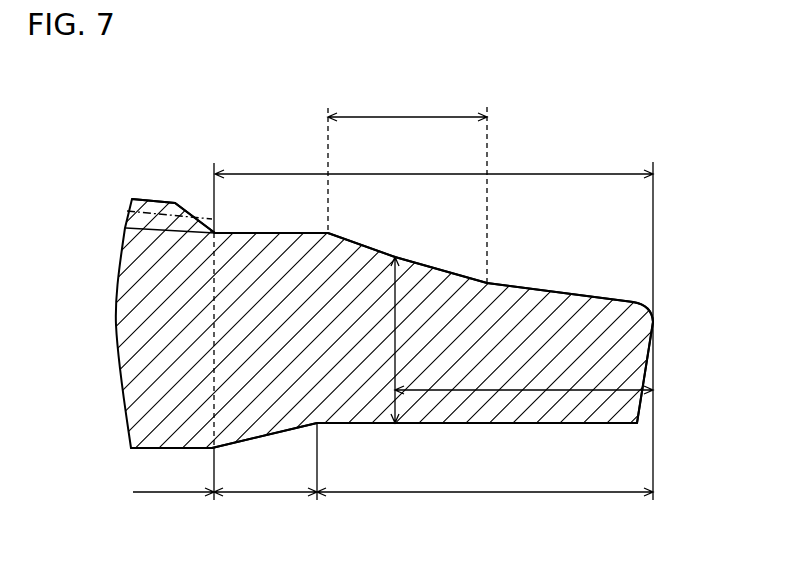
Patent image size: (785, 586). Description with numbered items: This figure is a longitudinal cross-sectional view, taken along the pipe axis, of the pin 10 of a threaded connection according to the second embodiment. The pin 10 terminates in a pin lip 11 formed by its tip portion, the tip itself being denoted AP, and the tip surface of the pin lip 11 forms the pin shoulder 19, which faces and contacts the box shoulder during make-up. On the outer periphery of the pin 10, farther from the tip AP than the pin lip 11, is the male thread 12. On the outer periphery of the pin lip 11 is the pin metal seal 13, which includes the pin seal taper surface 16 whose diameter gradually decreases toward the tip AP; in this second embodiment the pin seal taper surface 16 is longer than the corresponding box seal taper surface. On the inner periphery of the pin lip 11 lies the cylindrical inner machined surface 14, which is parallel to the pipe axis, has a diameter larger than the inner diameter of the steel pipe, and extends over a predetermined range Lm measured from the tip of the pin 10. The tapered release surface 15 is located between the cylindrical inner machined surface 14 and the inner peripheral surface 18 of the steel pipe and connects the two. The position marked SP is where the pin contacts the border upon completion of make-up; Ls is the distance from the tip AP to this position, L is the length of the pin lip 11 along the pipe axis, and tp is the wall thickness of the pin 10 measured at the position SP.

The pin 10 is at (327, 550).
The pin lip 11 is at (550, 172).
The male thread 12 is at (160, 212).
The pin metal seal 13 is at (410, 115).
The cylindrical inner machined surface 14 is at (573, 490).
The release surface 15 is at (287, 490).
The pin seal taper surface 16 is at (443, 265).
The inner peripheral surface of the steel pipe 18 is at (182, 490).
The pin shoulder 19 is at (652, 368).
The border SP is at (395, 256).
The tip of the pin AP is at (653, 323).